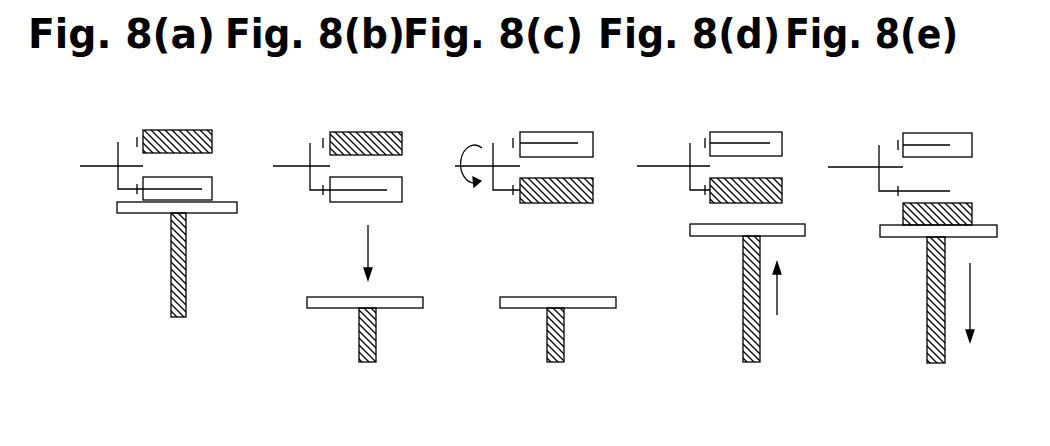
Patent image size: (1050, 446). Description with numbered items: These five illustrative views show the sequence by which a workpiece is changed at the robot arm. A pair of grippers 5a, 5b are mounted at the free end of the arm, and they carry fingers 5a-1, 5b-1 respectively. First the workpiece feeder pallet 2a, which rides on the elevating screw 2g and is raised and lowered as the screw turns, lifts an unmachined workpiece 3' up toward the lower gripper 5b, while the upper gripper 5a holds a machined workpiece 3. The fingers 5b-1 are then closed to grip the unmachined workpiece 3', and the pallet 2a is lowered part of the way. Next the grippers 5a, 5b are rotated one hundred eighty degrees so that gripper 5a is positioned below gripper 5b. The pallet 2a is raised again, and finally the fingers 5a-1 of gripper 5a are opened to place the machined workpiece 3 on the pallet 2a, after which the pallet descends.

In FIG. 8A, the machined workpiece 3 is at (196, 120).
In FIG. 8B, the machined workpiece 3 is at (384, 125).
In FIG. 8C, the machined workpiece 3 is at (573, 181).
In FIG. 8D, the machined workpiece 3 is at (761, 181).
In FIG. 8E, the machined workpiece 3 is at (959, 205).
In FIG. 8A, the unmachined workpiece 3' is at (194, 173).
In FIG. 8B, the unmachined workpiece 3' is at (383, 174).
In FIG. 8C, the unmachined workpiece 3' is at (578, 131).
In FIG. 8D, the unmachined workpiece 3' is at (764, 133).
In FIG. 8E, the unmachined workpiece 3' is at (958, 133).
In FIG. 8A, the gripper 5a is at (128, 141).
In FIG. 8B, the gripper 5a is at (320, 141).
In FIG. 8C, the gripper 5a is at (508, 193).
In FIG. 8D, the gripper 5a is at (697, 195).
In FIG. 8E, the gripper 5a is at (885, 195).
In FIG. 8A, the gripper 5b is at (130, 191).
In FIG. 8B, the gripper 5b is at (317, 195).
In FIG. 8C, the gripper 5b is at (508, 141).
In FIG. 8D, the gripper 5b is at (697, 141).
In FIG. 8E, the gripper 5b is at (889, 143).
In FIG. 8E, the fingers 5a-1 is at (935, 190).
In FIG. 8A, the fingers 5b-1 is at (190, 190).
In FIG. 8B, the fingers 5b-1 is at (377, 193).
In FIG. 8A, the pallet 2a is at (132, 213).
In FIG. 8B, the pallet 2a is at (330, 308).
In FIG. 8C, the pallet 2a is at (515, 308).
In FIG. 8D, the pallet 2a is at (718, 236).
In FIG. 8E, the pallet 2a is at (895, 237).
In FIG. 8A, the elevating screw 2g is at (170, 300).
In FIG. 8B, the elevating screw 2g is at (359, 353).
In FIG. 8C, the elevating screw 2g is at (547, 357).
In FIG. 8D, the elevating screw 2g is at (743, 327).
In FIG. 8E, the elevating screw 2g is at (927, 313).